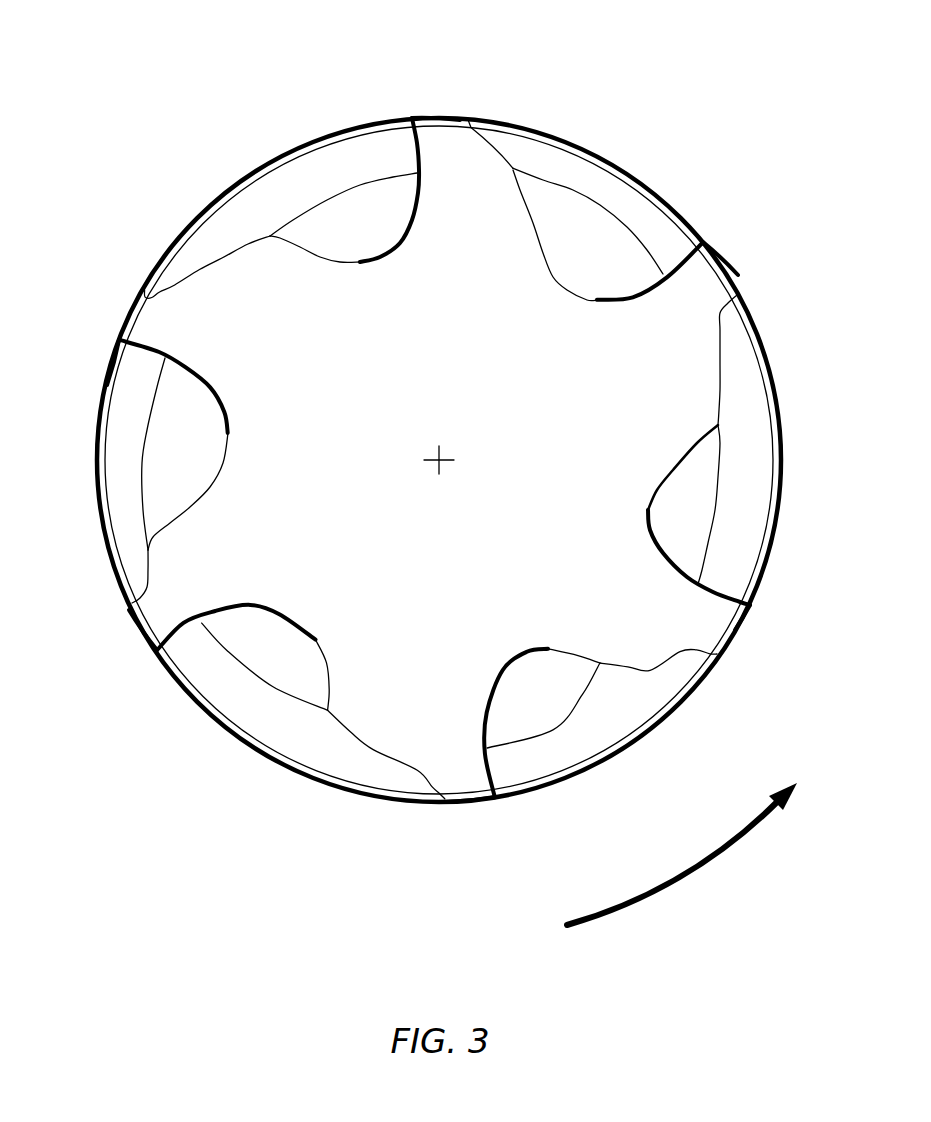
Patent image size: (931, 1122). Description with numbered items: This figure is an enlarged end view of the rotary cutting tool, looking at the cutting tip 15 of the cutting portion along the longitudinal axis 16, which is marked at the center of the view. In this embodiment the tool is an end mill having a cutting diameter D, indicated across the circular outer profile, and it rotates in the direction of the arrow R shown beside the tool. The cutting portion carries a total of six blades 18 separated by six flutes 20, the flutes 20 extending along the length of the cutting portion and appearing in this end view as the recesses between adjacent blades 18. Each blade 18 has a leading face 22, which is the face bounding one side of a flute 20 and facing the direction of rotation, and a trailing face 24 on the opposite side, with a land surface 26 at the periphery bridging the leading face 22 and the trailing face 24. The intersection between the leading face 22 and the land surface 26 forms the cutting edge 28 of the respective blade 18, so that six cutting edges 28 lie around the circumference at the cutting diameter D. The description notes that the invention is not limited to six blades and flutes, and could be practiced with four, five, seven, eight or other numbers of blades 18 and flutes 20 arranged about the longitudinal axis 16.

The cutting tip 15 is at (430, 589).
The longitudinal axis 16 is at (442, 458).
The blade 18 is at (430, 104).
The flute 20 is at (371, 208).
The leading face 22 is at (413, 155).
The trailing face 24 is at (221, 257).
The land surface 26 is at (459, 118).
The cutting edge 28 is at (411, 116).
The cutting diameter D is at (237, 177).
The direction of rotation R is at (690, 876).